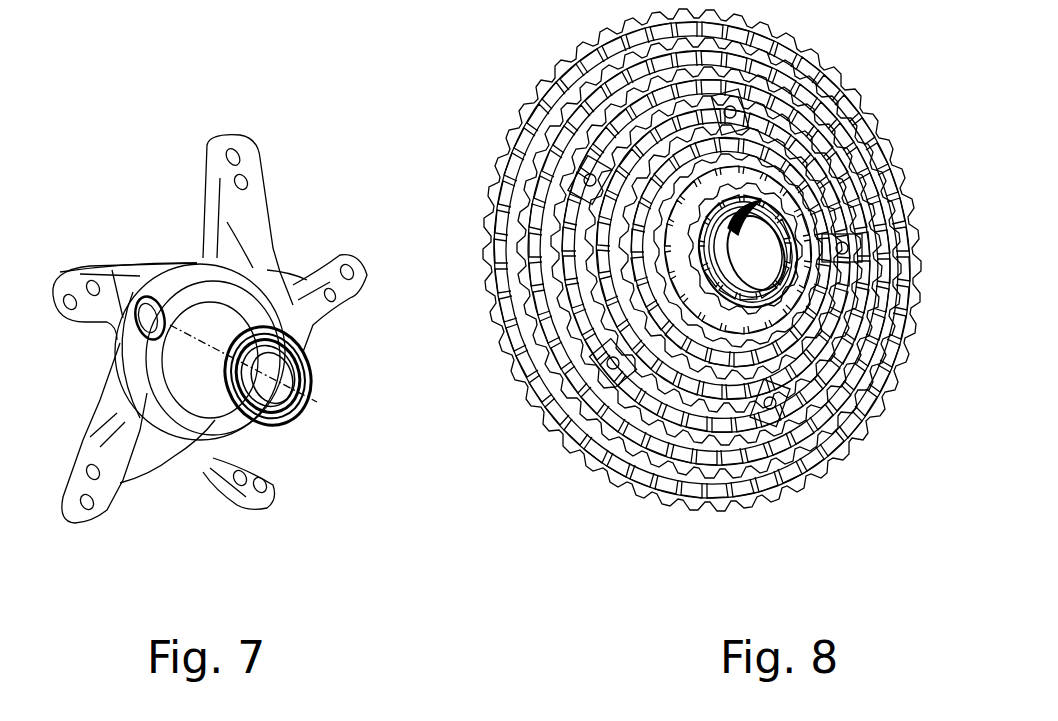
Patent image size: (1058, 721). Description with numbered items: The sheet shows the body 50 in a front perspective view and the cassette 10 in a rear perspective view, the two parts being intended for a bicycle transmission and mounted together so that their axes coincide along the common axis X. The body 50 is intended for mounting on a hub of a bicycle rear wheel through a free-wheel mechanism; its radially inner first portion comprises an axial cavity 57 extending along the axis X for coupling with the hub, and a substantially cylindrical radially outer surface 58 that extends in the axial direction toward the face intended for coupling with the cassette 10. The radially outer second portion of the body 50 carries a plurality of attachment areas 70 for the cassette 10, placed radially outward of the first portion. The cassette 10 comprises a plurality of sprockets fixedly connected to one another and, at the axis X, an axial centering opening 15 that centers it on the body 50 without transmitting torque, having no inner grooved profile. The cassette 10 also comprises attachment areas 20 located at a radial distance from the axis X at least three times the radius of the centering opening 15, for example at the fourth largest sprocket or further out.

In FIG. 8, the cassette 10 is at (517, 105).
In FIG. 8, the axial centering opening 15 is at (760, 246).
In FIG. 8, the attachment areas 20 is at (737, 98).
In FIG. 7, the body 50 is at (153, 182).
In FIG. 7, the axial cavity 57 is at (260, 381).
In FIG. 7, the radially outer surface 58 is at (203, 378).
In FIG. 7, the attachment areas 70 is at (248, 495).
In FIG. 7, the axis X is at (318, 400).